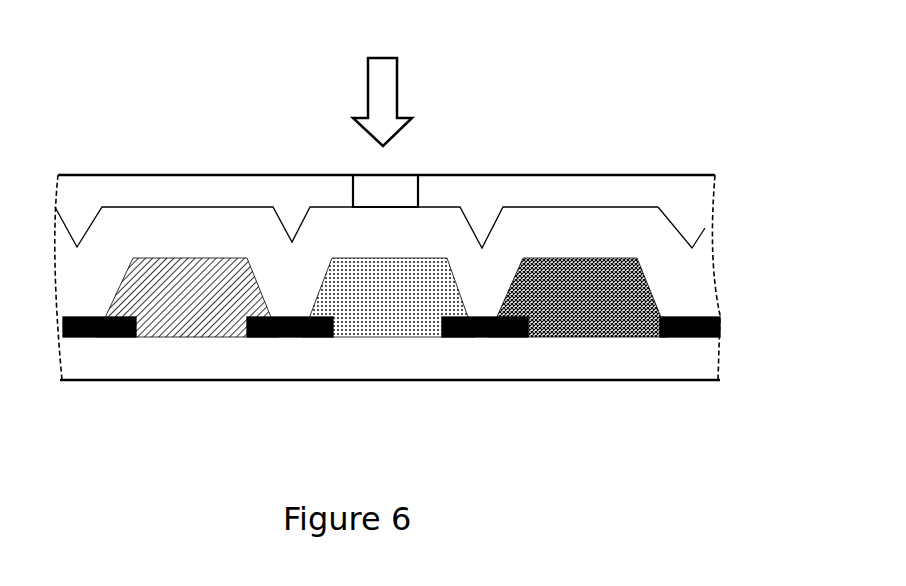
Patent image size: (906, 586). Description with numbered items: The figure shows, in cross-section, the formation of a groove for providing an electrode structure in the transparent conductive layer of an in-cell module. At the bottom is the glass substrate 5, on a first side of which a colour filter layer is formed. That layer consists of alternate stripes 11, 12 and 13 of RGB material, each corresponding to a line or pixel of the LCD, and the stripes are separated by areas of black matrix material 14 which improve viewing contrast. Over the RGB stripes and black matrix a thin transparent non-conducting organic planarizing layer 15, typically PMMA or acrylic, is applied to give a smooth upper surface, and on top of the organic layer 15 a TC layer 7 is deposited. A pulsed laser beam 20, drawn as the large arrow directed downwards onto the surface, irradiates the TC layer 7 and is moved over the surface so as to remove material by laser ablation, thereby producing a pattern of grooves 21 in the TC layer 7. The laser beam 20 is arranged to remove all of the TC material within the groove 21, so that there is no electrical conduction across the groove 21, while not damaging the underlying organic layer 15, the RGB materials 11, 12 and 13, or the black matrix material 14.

The glass substrate 5 is at (668, 364).
The TC layer 7 is at (634, 188).
The RGB stripe 11 is at (181, 304).
The RGB stripe 12 is at (390, 292).
The RGB stripe 13 is at (564, 284).
The black matrix material 14 is at (474, 337).
The organic planarizing layer 15 is at (680, 288).
The pulsed laser beam 20 is at (365, 96).
The groove 21 is at (404, 178).